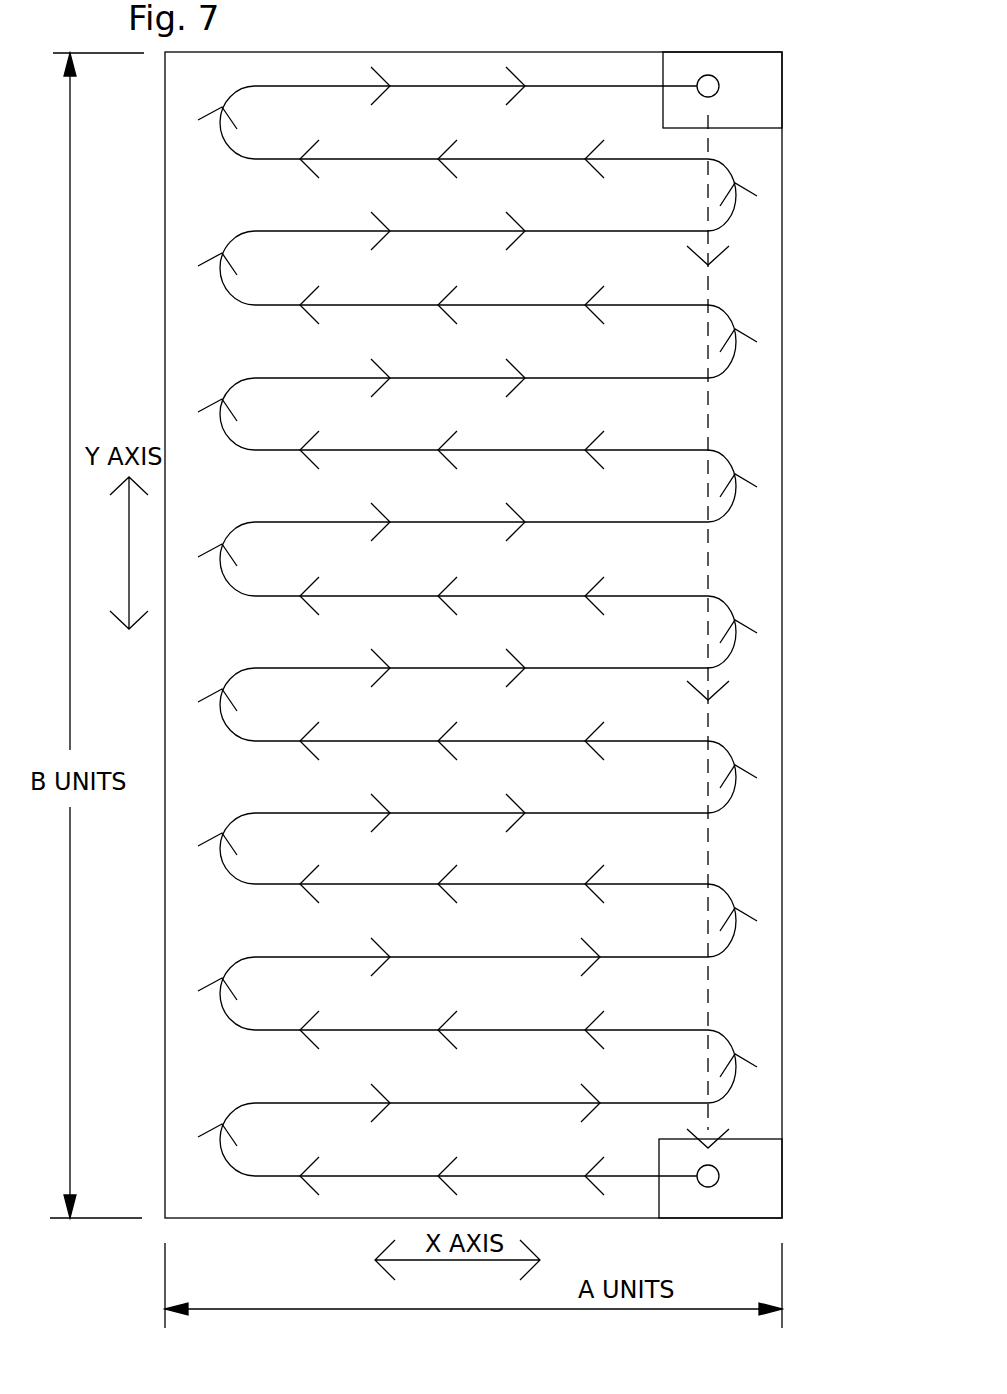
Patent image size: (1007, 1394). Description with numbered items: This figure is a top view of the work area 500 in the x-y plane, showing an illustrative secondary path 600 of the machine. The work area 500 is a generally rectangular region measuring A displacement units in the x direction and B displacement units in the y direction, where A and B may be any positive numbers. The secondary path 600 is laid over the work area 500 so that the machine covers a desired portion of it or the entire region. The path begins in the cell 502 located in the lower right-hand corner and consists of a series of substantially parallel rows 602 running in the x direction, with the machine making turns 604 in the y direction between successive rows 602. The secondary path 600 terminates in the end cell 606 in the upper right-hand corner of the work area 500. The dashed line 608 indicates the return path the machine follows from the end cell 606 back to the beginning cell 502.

The work area 500 is at (633, 52).
The cell 502 is at (753, 1162).
The secondary path 600 is at (480, 88).
The parallel rows 602 is at (473, 231).
The turns 604 is at (230, 247).
The end cell 606 is at (768, 85).
The dashed line 608 is at (710, 557).